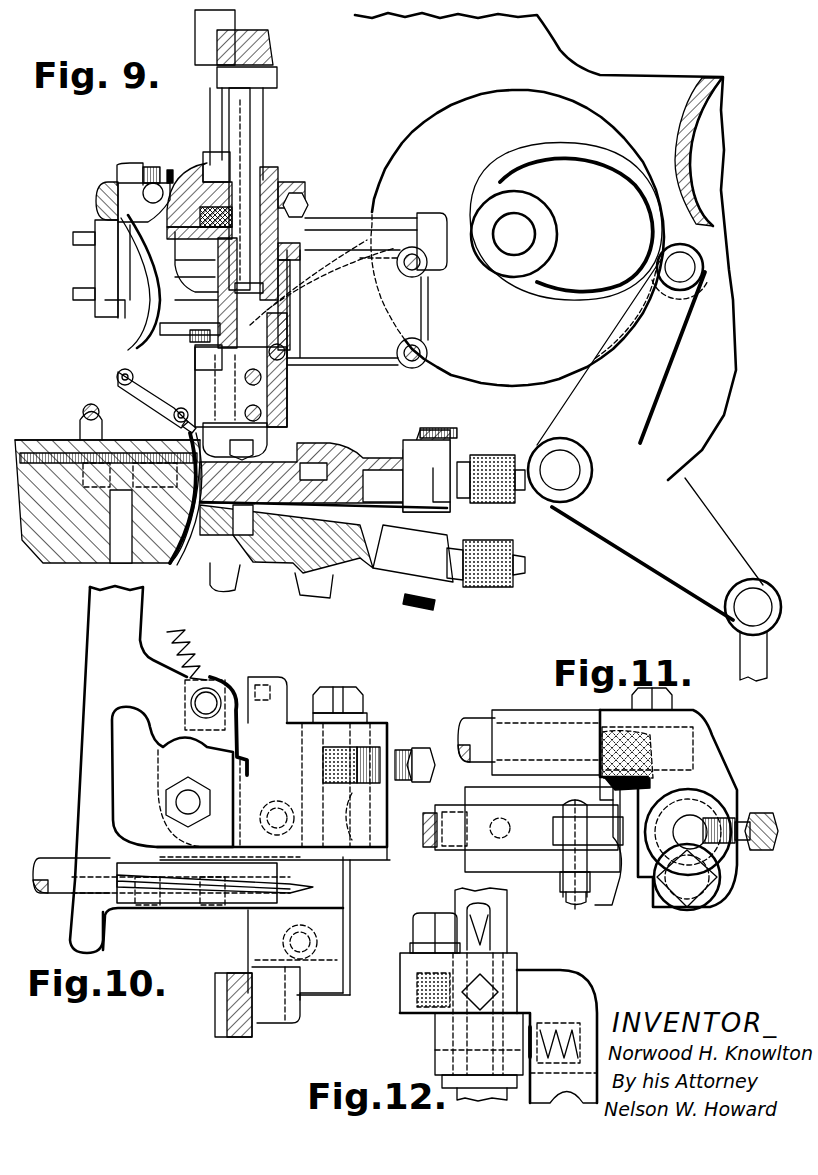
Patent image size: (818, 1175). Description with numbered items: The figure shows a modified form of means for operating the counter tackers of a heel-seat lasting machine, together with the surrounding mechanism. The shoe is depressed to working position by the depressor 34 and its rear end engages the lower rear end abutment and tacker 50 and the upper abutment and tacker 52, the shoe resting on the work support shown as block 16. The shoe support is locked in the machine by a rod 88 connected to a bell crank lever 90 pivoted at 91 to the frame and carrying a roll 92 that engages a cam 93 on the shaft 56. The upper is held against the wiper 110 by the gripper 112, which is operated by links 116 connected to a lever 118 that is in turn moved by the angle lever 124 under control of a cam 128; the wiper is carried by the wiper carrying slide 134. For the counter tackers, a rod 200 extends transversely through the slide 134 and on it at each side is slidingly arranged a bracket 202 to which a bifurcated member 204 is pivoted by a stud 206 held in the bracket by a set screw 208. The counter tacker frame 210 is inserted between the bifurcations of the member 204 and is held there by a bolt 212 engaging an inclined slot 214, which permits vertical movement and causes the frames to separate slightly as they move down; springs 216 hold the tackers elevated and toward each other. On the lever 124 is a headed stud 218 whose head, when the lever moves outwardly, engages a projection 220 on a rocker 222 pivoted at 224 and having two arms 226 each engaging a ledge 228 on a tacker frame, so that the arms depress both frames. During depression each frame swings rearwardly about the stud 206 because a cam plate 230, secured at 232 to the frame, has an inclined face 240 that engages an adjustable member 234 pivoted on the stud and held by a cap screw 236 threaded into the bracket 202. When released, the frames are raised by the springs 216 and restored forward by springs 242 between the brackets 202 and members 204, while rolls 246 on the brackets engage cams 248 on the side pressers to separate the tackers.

In FIG. 9, the die block 16 is at (118, 547).
In FIG. 9, the depressor 34 is at (83, 444).
In FIG. 9, the lower rear end abutment and tacker 50 is at (290, 552).
In FIG. 9, the upper abutment and tacker 52 is at (345, 440).
In FIG. 9, the shaft 56 is at (521, 235).
In FIG. 9, the rod 88 is at (745, 660).
In FIG. 9, the bell crank lever 90 is at (622, 432).
In FIG. 9, the pivot 91 is at (548, 480).
In FIG. 9, the roll 92 is at (697, 250).
In FIG. 9, the cam 93 is at (555, 290).
In FIG. 9, the wiper 110 is at (285, 447).
In FIG. 9, the gripper 112 is at (175, 427).
In FIG. 9, the links 116 is at (143, 398).
In FIG. 9, the lever 118 is at (165, 335).
In FIG. 9, the angle lever 124 is at (330, 235).
In FIG. 9, the cam 128 is at (386, 167).
In FIG. 9, the wiper carrying slide 134 is at (330, 390).
In FIG. 9, the rod 200 is at (263, 407).
In FIG. 10, the rod 200 is at (62, 863).
In FIG. 11, the rod 200 is at (478, 730).
In FIG. 12, the rod 200 is at (553, 1093).
In FIG. 10, the bracket 202 is at (330, 933).
In FIG. 11, the bracket 202 is at (707, 747).
In FIG. 10, the bifurcated member 204 is at (393, 843).
In FIG. 11, the bifurcated member 204 is at (508, 800).
In FIG. 12, the bifurcated member 204 is at (443, 1037).
In FIG. 10, the stud 206 is at (347, 840).
In FIG. 11, the stud 206 is at (693, 830).
In FIG. 12, the stud 206 is at (487, 1050).
In FIG. 10, the set screw 208 is at (410, 745).
In FIG. 11, the set screw 208 is at (757, 852).
In FIG. 12, the set screw 208 is at (483, 987).
In FIG. 9, the counter tacker frame 210 is at (190, 337).
In FIG. 10, the counter tacker frame 210 is at (122, 617).
In FIG. 11, the counter tacker frame 210 is at (475, 845).
In FIG. 12, the counter tacker frame 210 is at (500, 933).
In FIG. 10, the bolt 212 is at (186, 801).
In FIG. 10, the inclined slot 214 is at (192, 753).
In FIG. 10, the springs 216 is at (187, 675).
In FIG. 9, the headed stud 218 is at (100, 263).
In FIG. 9, the projection 220 is at (97, 217).
In FIG. 9, the rocker 222 is at (100, 190).
In FIG. 9, the pivot 224 is at (153, 183).
In FIG. 9, the arms 226 is at (196, 165).
In FIG. 9, the ledge 228 is at (280, 180).
In FIG. 10, the cam plate 230 is at (233, 687).
In FIG. 11, the cam plate 230 is at (585, 895).
In FIG. 10, the securing point 232 is at (208, 700).
In FIG. 10, the adjustable member 234 is at (347, 687).
In FIG. 11, the adjustable member 234 is at (690, 900).
In FIG. 12, the adjustable member 234 is at (450, 930).
In FIG. 9, the cap screw 236 is at (195, 340).
In FIG. 10, the cap screw 236 is at (392, 747).
In FIG. 11, the cap screw 236 is at (717, 877).
In FIG. 12, the cap screw 236 is at (420, 932).
In FIG. 12, the inclined face 240 is at (467, 937).
In FIG. 11, the springs 242 is at (614, 800).
In FIG. 12, the springs 242 is at (531, 1020).
In FIG. 9, the rolls 246 is at (412, 440).
In FIG. 10, the rolls 246 is at (265, 1003).
In FIG. 11, the rolls 246 is at (585, 765).
In FIG. 9, the cams 248 is at (190, 445).
In FIG. 10, the cams 248 is at (218, 987).
In FIG. 11, the cams 248 is at (608, 897).